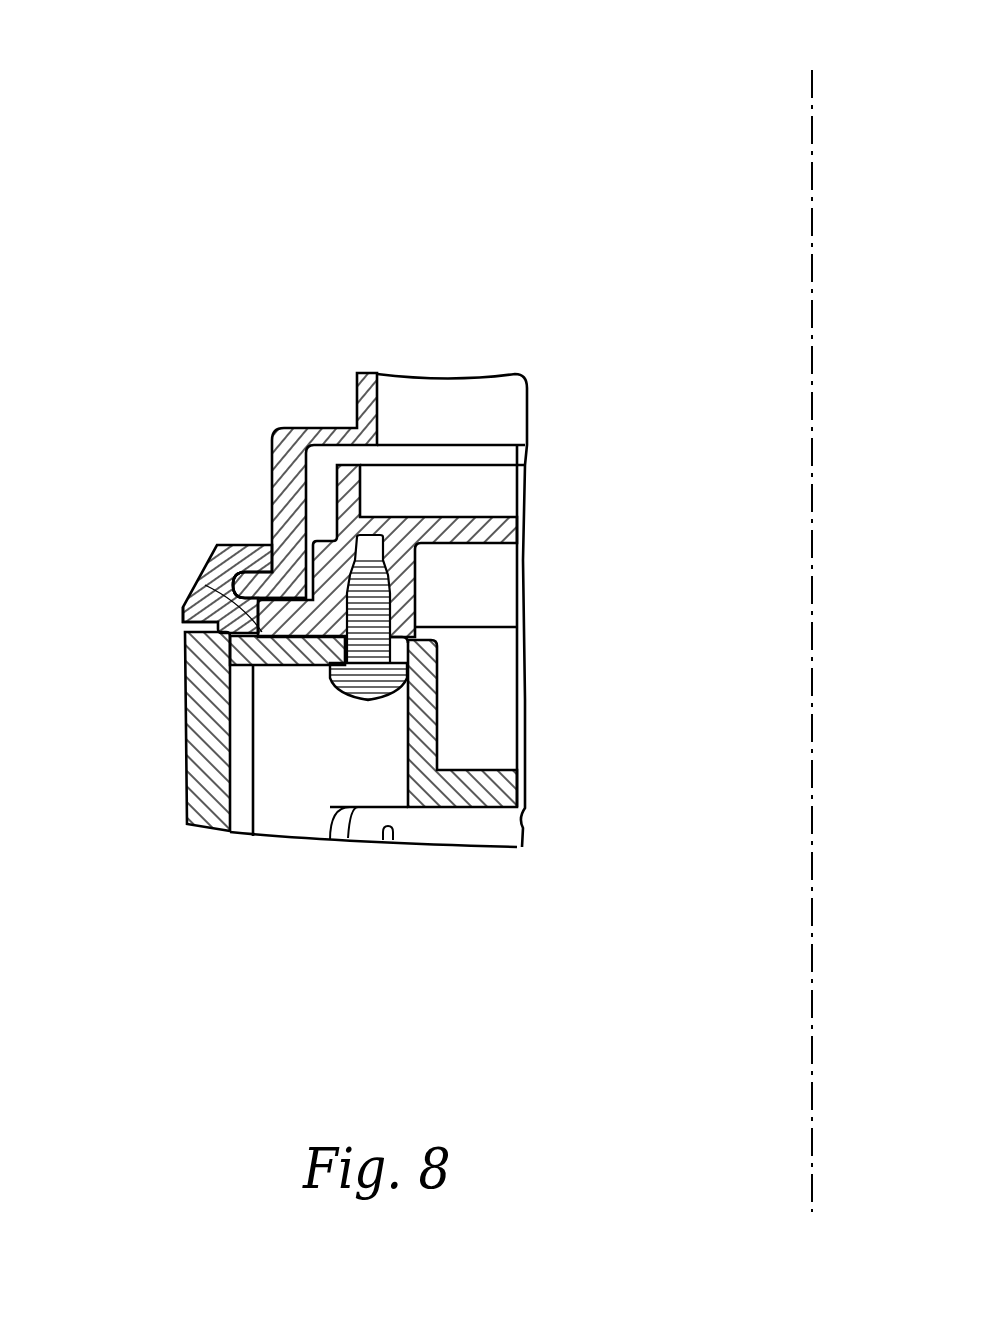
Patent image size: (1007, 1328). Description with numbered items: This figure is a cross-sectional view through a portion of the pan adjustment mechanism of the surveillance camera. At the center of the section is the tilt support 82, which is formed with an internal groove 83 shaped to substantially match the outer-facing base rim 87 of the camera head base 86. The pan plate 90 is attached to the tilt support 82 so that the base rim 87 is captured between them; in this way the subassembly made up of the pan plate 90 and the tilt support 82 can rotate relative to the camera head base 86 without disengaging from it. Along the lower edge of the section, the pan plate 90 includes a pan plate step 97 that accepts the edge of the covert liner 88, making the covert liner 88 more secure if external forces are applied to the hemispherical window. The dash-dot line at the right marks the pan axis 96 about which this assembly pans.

The tilt support 82 is at (195, 582).
The internal groove 83 is at (183, 617).
The camera head base 86 is at (322, 417).
The base rim 87 is at (240, 546).
The covert liner 88 is at (203, 778).
The pan plate 90 is at (458, 512).
The pan axis 96 is at (812, 125).
The pan plate step 97 is at (240, 676).